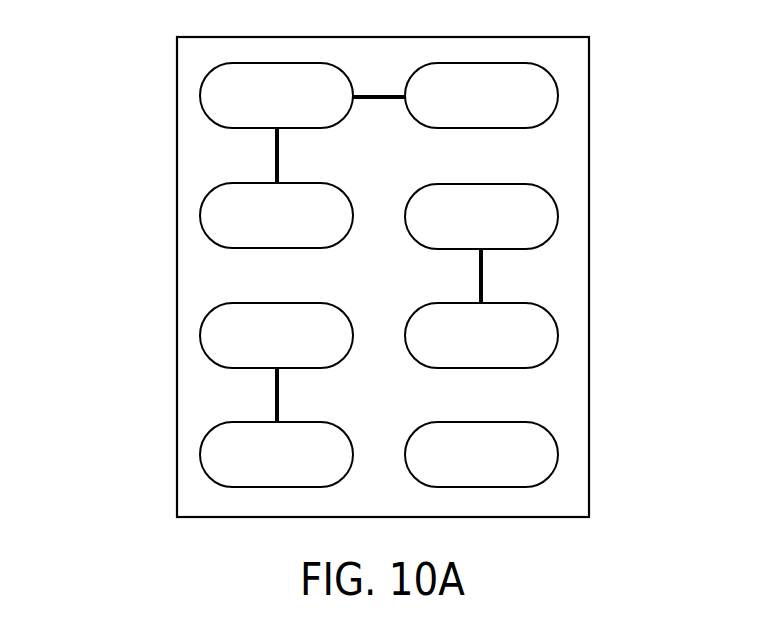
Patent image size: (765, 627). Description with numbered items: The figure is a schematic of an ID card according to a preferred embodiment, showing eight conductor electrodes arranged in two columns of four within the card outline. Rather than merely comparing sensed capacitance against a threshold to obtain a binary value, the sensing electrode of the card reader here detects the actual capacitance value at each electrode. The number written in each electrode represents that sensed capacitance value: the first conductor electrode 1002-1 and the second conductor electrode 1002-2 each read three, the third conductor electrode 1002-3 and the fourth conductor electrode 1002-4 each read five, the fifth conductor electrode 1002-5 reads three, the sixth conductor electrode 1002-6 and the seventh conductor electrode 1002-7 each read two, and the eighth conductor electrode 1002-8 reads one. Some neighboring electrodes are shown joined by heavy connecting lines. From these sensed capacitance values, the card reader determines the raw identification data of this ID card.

The conductor electrode 1002-1 is at (197, 73).
The conductor electrode 1002-2 is at (216, 207).
The conductor electrode 1002-3 is at (216, 331).
The conductor electrode 1002-4 is at (216, 463).
The conductor electrode 1002-5 is at (541, 74).
The conductor electrode 1002-6 is at (541, 209).
The conductor electrode 1002-7 is at (542, 333).
The conductor electrode 1002-8 is at (542, 462).